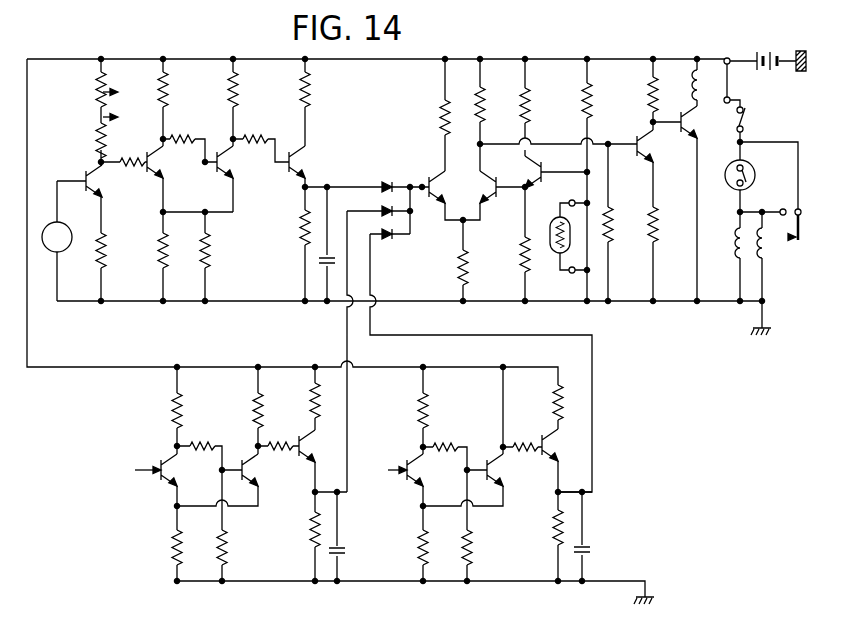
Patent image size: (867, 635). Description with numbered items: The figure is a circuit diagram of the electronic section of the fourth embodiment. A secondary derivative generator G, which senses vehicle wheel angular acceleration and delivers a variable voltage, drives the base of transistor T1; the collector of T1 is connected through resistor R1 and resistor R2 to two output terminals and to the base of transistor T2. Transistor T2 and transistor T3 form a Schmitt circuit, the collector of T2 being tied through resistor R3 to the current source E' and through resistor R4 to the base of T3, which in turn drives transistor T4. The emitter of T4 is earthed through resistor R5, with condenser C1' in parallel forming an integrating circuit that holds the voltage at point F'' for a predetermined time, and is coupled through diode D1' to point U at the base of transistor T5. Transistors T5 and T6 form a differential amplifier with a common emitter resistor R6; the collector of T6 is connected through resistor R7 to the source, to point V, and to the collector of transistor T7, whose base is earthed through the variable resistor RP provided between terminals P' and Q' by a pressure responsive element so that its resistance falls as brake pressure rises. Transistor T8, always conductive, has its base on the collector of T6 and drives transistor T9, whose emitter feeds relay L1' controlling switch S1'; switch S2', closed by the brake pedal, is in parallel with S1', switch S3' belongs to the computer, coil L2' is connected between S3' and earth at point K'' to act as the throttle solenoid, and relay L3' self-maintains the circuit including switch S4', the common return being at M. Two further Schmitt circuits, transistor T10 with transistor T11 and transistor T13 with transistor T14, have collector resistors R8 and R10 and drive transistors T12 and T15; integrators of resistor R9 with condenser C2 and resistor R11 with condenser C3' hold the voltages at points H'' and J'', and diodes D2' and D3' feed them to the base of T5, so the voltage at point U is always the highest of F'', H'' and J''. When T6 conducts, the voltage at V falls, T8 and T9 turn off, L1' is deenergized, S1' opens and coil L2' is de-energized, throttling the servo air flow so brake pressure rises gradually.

The resistor R1 is at (97, 144).
The resistor R2 is at (98, 94).
The resistor R3 is at (165, 98).
The resistor R4 is at (185, 136).
The resistor R5 is at (302, 230).
The common resistor R6 is at (468, 260).
The resistor R7 is at (484, 104).
The resistor R8 is at (180, 410).
The resistor R9 is at (308, 530).
The resistor R10 is at (430, 414).
The resistor R11 is at (555, 525).
The variable resistor RP is at (554, 254).
The transistor T1 is at (82, 172).
The transistor T2 is at (145, 180).
The transistor T3 is at (214, 173).
The transistor T4 is at (287, 173).
The transistor T5 is at (440, 208).
The transistor T6 is at (488, 206).
The transistor T7 is at (536, 169).
The transistor T8 is at (641, 148).
The transistor T9 is at (684, 118).
The transistor T10 is at (160, 483).
The transistor T11 is at (253, 470).
The transistor T12 is at (302, 429).
The transistor T13 is at (412, 488).
The transistor T14 is at (497, 469).
The transistor T15 is at (564, 445).
The condenser C1' is at (310, 296).
The condenser C2 is at (348, 552).
The condenser C3' is at (599, 540).
The diode D1' is at (372, 171).
The diode D2' is at (394, 240).
The diode D3' is at (382, 263).
The relay L1' is at (678, 60).
The coil L2' is at (722, 248).
The relay L3' is at (773, 268).
The switch S1' is at (749, 80).
The switch S2' is at (764, 123).
The switch S3' is at (752, 173).
The switch S4' is at (800, 247).
The current source E' is at (777, 41).
The secondary derivative generator G is at (57, 237).
The point U is at (408, 187).
The circuit point X is at (421, 186).
The point V is at (482, 144).
The point F'' is at (280, 209).
The point H'' is at (292, 513).
The point J'' is at (572, 479).
The circuit point K K'' is at (725, 214).
The circuit point M is at (739, 302).
The terminal P' is at (573, 196).
The terminal Q' is at (573, 276).